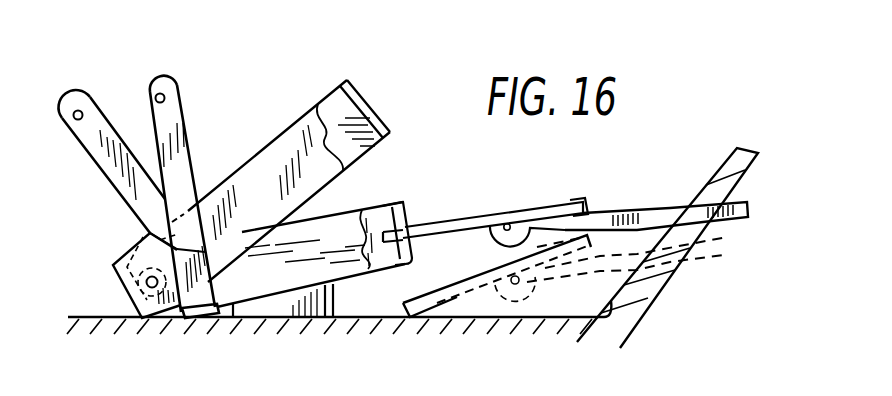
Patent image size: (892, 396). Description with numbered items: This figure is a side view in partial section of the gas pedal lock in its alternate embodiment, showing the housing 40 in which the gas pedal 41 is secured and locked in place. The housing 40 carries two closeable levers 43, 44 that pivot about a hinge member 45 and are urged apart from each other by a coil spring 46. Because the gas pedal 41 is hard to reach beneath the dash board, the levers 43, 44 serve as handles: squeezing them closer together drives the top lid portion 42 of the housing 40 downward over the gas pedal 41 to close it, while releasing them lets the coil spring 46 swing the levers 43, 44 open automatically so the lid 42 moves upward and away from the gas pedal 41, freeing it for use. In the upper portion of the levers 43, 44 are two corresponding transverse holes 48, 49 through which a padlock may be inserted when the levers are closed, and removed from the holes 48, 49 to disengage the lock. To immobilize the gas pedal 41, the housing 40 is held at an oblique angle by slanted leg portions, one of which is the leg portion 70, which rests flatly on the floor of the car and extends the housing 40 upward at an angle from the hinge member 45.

The housing 40 is at (355, 73).
The gas pedal 41 is at (497, 215).
The top lid portion 42 is at (287, 124).
The closeable lever 43 is at (113, 127).
The closeable lever 44 is at (213, 105).
The hinge member 45 is at (140, 257).
The coil spring 46 is at (133, 302).
The transverse hole 48 is at (161, 92).
The transverse hole 49 is at (95, 78).
The slanted leg portion 70 is at (334, 295).